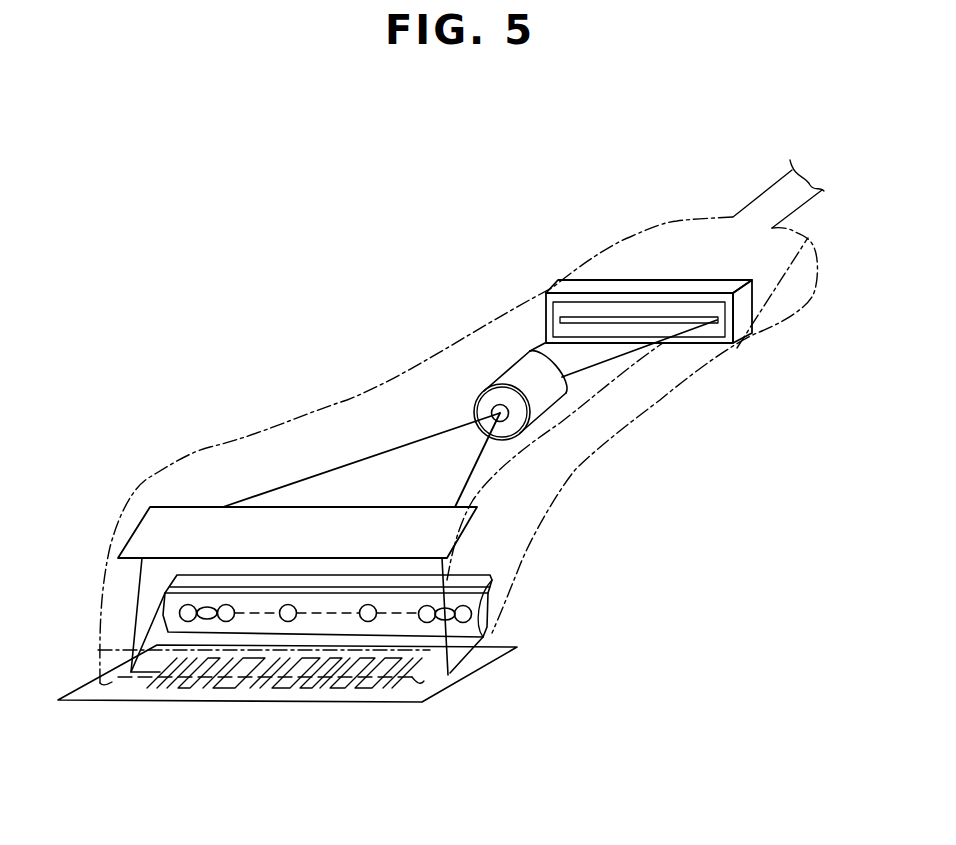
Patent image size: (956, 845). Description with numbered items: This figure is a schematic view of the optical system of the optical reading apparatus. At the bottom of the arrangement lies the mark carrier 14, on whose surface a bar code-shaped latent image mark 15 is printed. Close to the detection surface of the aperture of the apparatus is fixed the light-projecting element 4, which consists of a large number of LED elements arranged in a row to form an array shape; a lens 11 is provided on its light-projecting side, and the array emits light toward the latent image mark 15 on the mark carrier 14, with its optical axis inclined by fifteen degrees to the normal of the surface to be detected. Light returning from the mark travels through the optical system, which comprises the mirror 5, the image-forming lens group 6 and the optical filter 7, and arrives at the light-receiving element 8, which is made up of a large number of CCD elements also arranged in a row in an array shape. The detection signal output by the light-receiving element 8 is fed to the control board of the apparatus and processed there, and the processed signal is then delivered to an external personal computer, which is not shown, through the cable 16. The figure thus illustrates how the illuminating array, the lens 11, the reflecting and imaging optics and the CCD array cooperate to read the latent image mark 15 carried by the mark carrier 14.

The light-projecting element 4 is at (492, 597).
The mirror 5 is at (463, 530).
The image-forming lens group 6 is at (540, 413).
The optical filter 7 is at (557, 310).
The light-receiving element 8 is at (753, 303).
The lens 11 is at (487, 627).
The mark carrier 14 is at (472, 677).
The latent image mark 15 is at (310, 688).
The cable 16 is at (763, 207).